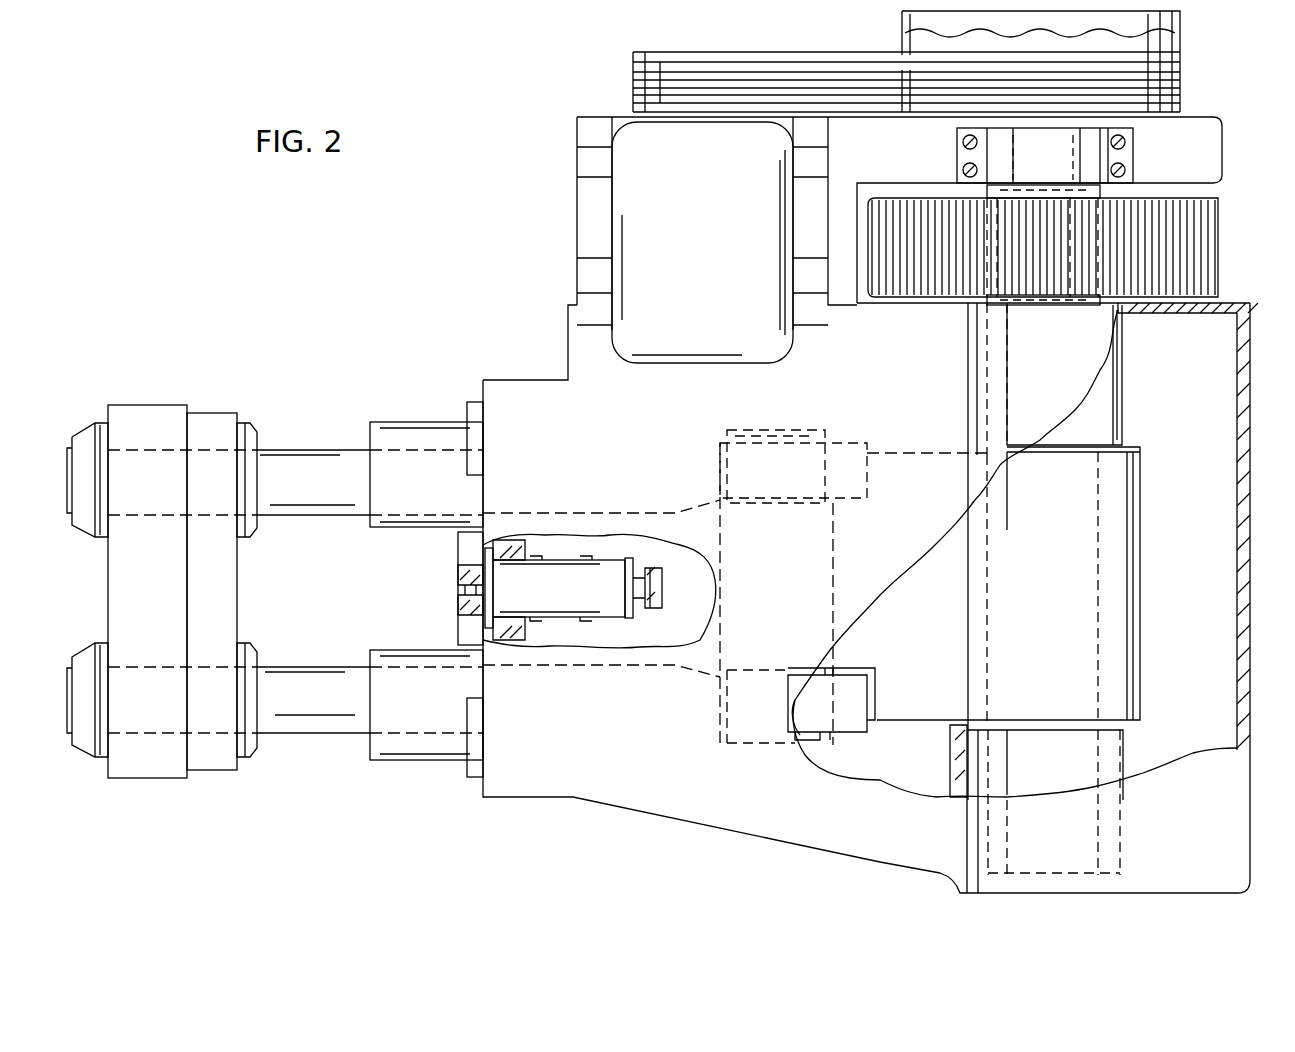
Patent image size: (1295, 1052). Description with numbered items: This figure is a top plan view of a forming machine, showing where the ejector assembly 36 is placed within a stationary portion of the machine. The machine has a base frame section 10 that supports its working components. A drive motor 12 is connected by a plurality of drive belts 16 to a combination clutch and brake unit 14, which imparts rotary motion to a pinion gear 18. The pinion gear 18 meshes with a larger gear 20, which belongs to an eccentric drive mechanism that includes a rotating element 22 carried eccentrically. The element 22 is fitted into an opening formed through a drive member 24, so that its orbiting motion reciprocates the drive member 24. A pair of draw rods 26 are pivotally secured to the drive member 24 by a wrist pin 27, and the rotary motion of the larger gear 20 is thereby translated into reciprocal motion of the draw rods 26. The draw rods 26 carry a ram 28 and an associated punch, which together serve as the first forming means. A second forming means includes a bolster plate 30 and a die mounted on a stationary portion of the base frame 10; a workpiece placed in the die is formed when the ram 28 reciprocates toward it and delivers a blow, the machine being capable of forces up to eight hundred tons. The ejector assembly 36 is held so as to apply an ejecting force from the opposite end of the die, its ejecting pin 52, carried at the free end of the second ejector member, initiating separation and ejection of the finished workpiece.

The base frame section 10 is at (528, 325).
The drive motor 12 is at (778, 342).
The combination clutch and brake unit 14 is at (1176, 48).
The drive belts 16 is at (840, 78).
The pinion gear 18 is at (1047, 300).
The larger gear 20 is at (1222, 266).
The rotating element 22 is at (1098, 531).
The drive member 24 is at (822, 660).
The draw rods 26 is at (304, 457).
The wrist pin 27 is at (800, 430).
The ram 28 is at (237, 604).
The bolster plate 30 is at (458, 550).
The ejector assembly 36 is at (618, 555).
The ejecting pin 52 is at (458, 597).